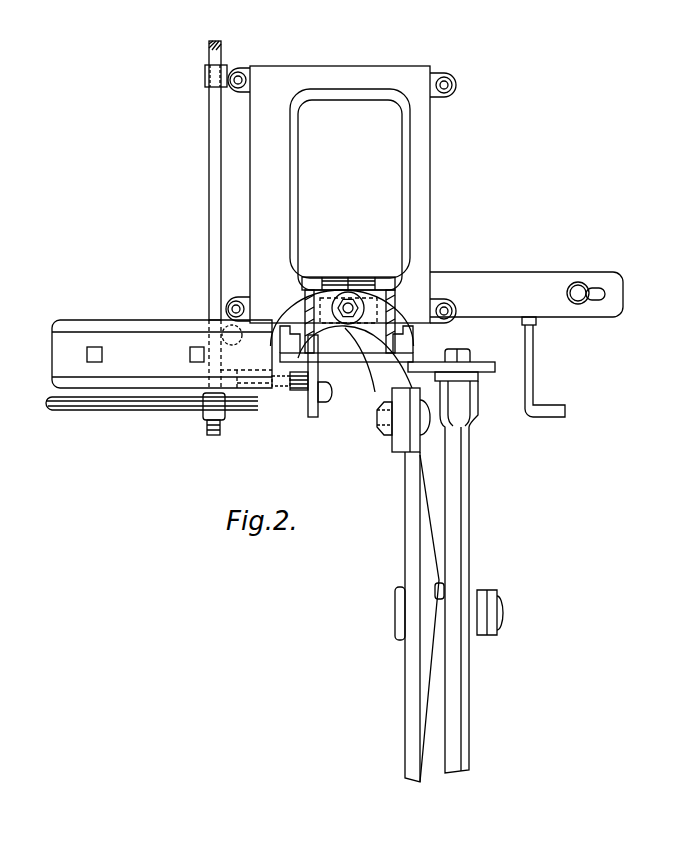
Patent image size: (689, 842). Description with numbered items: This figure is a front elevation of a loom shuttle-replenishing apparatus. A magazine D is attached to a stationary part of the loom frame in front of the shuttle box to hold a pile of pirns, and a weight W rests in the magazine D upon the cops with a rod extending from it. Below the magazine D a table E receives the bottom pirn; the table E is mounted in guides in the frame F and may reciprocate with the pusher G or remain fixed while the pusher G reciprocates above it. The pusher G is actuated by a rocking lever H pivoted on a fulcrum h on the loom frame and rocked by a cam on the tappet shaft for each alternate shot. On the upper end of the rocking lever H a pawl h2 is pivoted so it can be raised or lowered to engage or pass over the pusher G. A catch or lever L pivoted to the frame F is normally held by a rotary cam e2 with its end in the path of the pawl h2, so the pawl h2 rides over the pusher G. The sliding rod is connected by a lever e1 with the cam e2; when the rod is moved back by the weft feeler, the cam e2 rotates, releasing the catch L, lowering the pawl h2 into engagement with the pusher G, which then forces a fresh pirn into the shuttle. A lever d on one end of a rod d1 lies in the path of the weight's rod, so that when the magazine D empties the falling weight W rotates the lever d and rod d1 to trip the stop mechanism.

The magazine D is at (424, 241).
The weight W is at (214, 134).
The pawl h2 is at (326, 281).
The pusher G is at (282, 333).
The table E is at (413, 362).
The frame F is at (278, 348).
The lever e1 is at (218, 324).
The rotary cam e2 is at (309, 368).
The catch or lever L is at (298, 383).
The rocking lever H is at (380, 386).
The fulcrum h is at (483, 608).
The rod d1 is at (128, 412).
The lever d is at (238, 417).